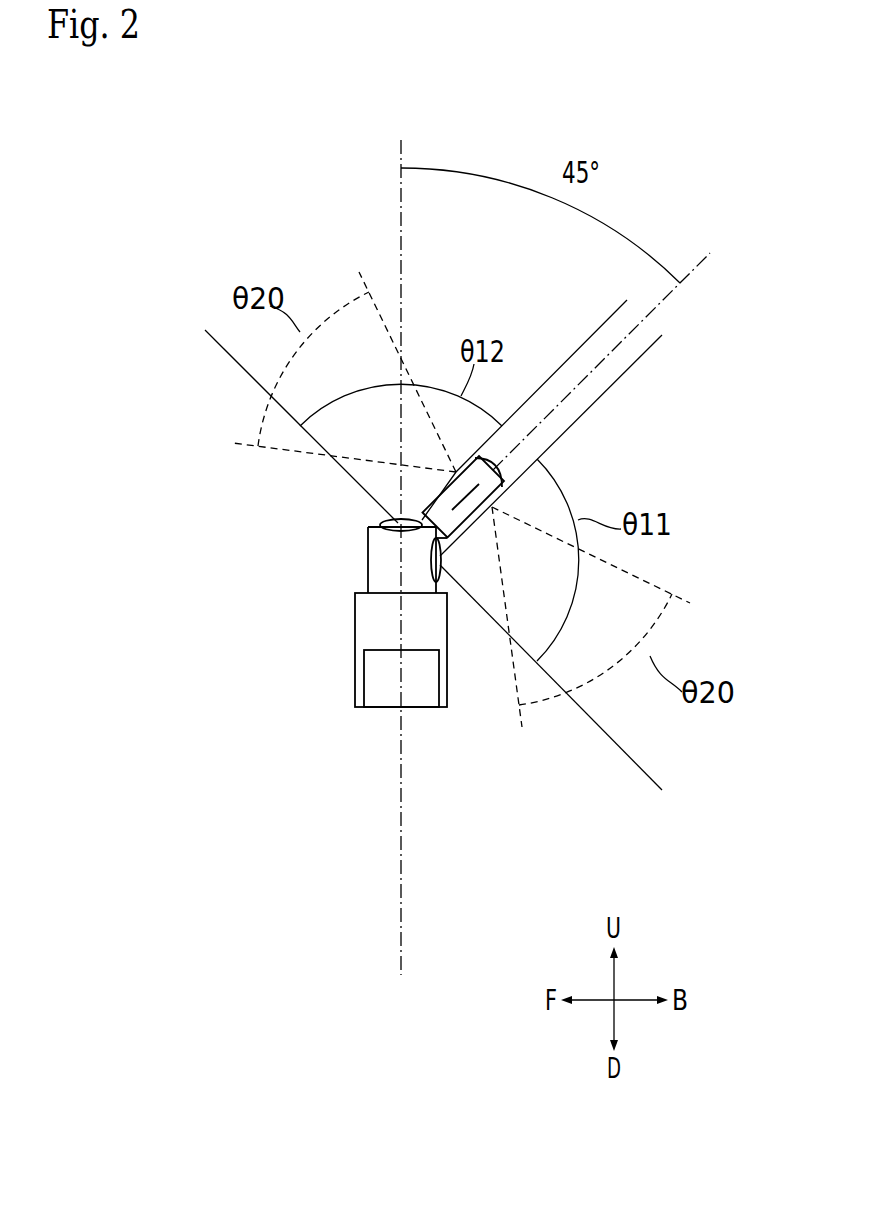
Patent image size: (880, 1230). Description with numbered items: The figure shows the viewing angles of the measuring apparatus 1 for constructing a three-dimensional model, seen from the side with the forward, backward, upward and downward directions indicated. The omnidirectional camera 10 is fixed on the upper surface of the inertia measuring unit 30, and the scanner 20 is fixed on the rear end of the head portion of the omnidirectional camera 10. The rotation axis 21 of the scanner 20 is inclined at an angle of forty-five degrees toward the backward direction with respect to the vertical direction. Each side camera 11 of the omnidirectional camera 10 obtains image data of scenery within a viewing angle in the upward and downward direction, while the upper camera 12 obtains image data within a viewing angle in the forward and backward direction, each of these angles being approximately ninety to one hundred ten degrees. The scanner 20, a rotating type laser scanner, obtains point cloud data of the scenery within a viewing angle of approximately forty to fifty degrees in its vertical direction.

The measuring apparatus 1 is at (318, 625).
The omnidirectional camera 10 is at (380, 560).
The side camera 11 is at (443, 574).
The upper camera 12 is at (382, 523).
The scanner 20 is at (506, 483).
The rotation axis 21 is at (619, 345).
The inertia measuring unit 30 is at (385, 698).